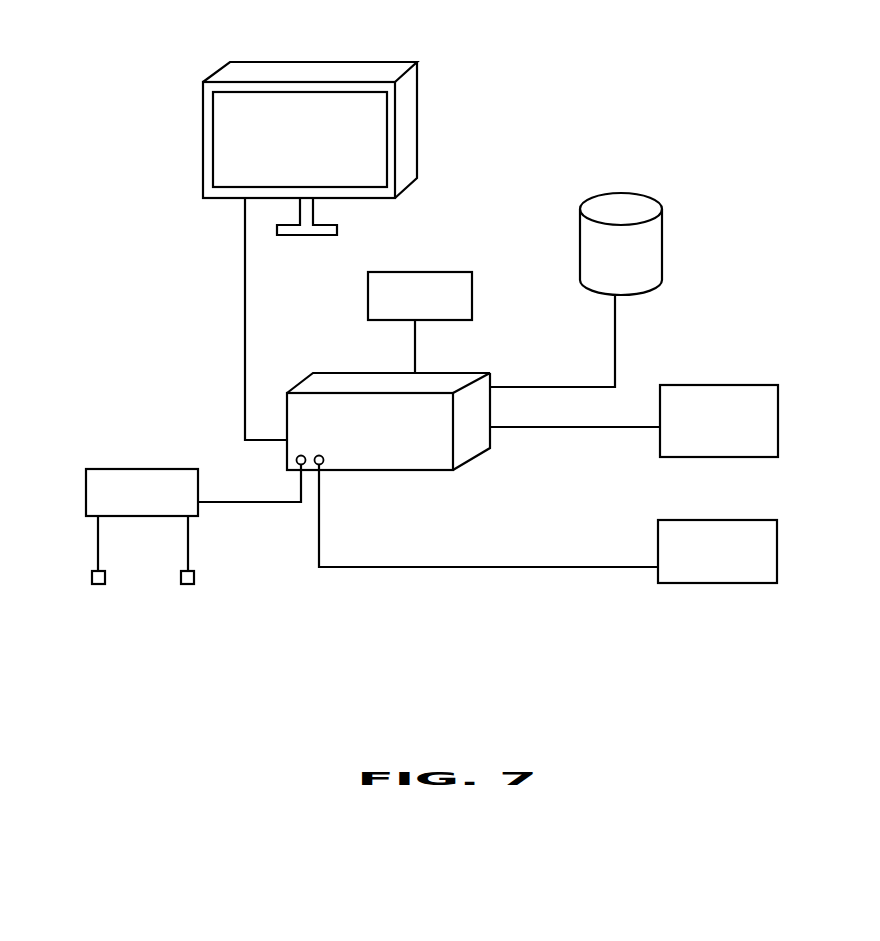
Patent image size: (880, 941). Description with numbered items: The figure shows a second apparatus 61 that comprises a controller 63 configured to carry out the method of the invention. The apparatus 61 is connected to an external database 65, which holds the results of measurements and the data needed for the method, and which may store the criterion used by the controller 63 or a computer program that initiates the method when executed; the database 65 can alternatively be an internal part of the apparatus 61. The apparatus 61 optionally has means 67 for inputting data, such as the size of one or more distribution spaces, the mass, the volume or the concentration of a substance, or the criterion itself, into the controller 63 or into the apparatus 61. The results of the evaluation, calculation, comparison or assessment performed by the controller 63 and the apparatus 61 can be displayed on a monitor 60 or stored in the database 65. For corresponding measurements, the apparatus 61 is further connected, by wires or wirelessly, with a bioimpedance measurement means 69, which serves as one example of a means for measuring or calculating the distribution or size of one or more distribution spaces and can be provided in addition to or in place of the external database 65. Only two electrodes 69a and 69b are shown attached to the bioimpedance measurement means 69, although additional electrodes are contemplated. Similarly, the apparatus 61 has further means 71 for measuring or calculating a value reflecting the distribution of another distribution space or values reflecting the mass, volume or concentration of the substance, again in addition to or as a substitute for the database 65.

The monitor 60 is at (380, 128).
The apparatus 61 is at (398, 450).
The controller 63 is at (420, 322).
The external database 65 is at (643, 257).
The means for inputting data 67 is at (737, 402).
The bioimpedance measurement means 69 is at (135, 482).
The electrode 69a is at (92, 577).
The electrode 69b is at (188, 577).
The further means for measuring or calculating 71 is at (767, 555).